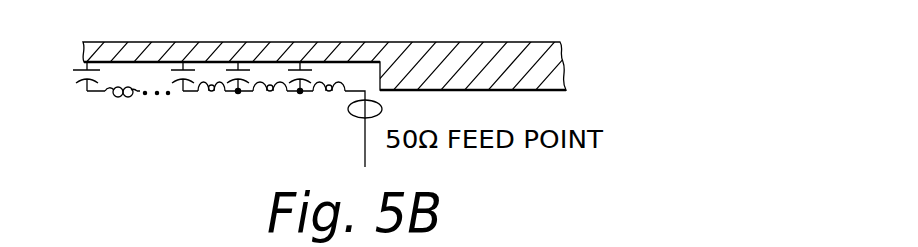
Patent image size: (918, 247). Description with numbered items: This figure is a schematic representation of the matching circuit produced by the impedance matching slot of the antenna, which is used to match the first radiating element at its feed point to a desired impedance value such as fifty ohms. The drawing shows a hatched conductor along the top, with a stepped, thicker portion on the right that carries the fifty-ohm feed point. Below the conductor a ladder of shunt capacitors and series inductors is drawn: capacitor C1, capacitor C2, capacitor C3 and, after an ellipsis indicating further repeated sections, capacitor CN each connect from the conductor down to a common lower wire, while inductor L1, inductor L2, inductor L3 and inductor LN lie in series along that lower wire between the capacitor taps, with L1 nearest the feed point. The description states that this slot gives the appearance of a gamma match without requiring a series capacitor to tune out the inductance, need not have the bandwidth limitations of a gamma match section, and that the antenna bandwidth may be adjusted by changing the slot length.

The capacitor N CN is at (87, 45).
The capacitor 3 C3 is at (187, 45).
The capacitor 2 C2 is at (242, 47).
The capacitor 1 C1 is at (304, 47).
The inductor N LN is at (118, 115).
The inductor 3 L3 is at (212, 113).
The inductor 2 L2 is at (271, 113).
The inductor 1 L1 is at (330, 113).